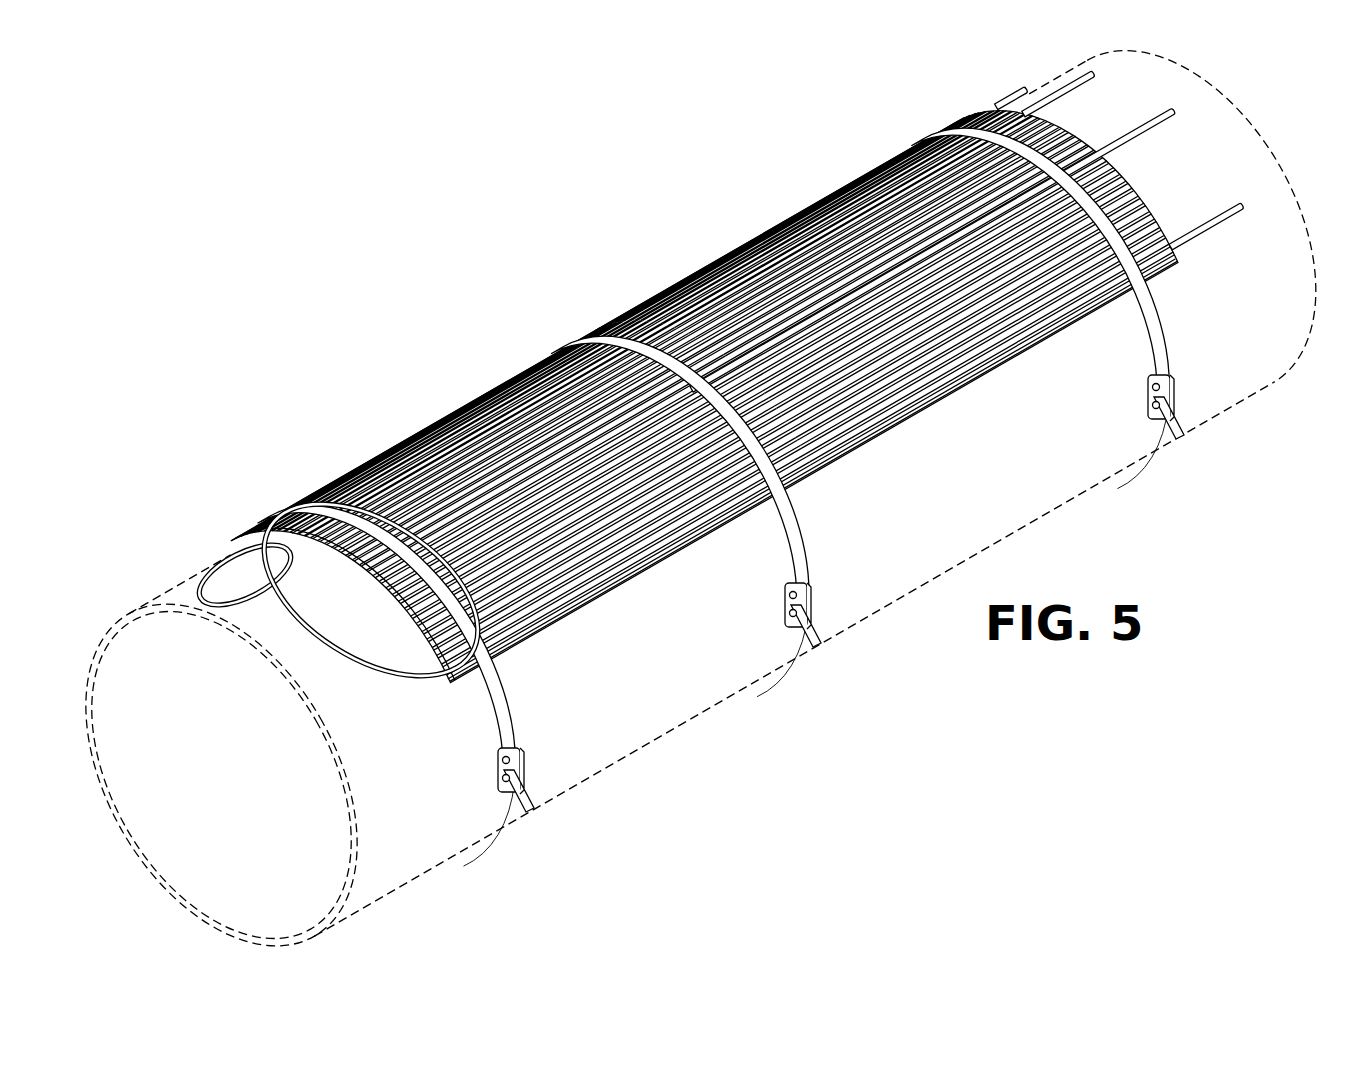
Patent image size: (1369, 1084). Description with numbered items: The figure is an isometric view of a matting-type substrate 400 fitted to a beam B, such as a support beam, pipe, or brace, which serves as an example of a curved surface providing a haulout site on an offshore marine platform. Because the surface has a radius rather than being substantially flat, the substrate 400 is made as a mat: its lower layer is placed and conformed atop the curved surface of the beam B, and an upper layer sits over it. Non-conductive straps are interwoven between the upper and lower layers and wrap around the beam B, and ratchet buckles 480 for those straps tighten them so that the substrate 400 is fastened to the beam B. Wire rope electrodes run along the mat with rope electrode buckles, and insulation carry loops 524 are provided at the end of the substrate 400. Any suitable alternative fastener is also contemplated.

The substrate 400 is at (733, 451).
The ratchet buckles 480 is at (1175, 392).
The insulation carry loops 524 is at (204, 558).
The beam B is at (1025, 534).